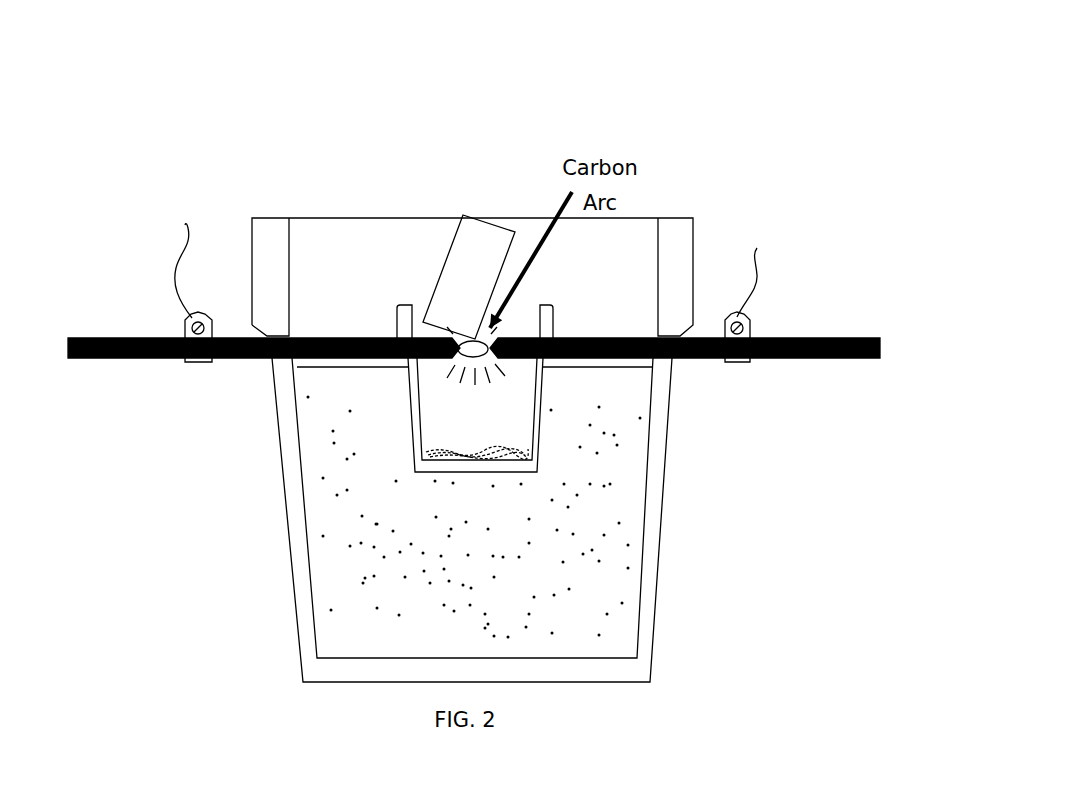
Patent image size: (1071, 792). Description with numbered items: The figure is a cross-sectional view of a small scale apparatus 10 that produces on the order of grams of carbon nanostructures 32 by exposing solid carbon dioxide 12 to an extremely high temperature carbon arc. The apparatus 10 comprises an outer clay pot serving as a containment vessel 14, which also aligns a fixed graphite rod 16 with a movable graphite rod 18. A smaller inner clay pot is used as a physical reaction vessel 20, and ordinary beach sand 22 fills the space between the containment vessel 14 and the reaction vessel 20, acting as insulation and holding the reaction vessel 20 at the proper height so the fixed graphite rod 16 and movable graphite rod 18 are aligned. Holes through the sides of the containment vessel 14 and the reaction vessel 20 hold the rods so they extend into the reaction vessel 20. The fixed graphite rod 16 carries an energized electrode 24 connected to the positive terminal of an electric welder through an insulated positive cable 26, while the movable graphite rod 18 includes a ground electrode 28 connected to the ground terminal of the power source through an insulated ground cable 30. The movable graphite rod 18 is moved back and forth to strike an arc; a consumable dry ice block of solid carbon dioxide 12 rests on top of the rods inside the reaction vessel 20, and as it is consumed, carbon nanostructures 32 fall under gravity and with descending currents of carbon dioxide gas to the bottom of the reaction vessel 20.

The small scale apparatus 10 is at (447, 44).
The solid carbon dioxide 12 is at (480, 283).
The containment vessel 14 is at (276, 233).
The fixed graphite rod 16 is at (102, 330).
The movable graphite rod 18 is at (805, 330).
The physical reaction vessel 20 is at (409, 302).
The beach sand 22 is at (323, 586).
The energized electrode 24 is at (199, 368).
The insulated positive cable 26 is at (182, 254).
The ground electrode 28 is at (737, 368).
The insulated ground cable 30 is at (753, 253).
The carbon nanostructures 32 is at (474, 441).